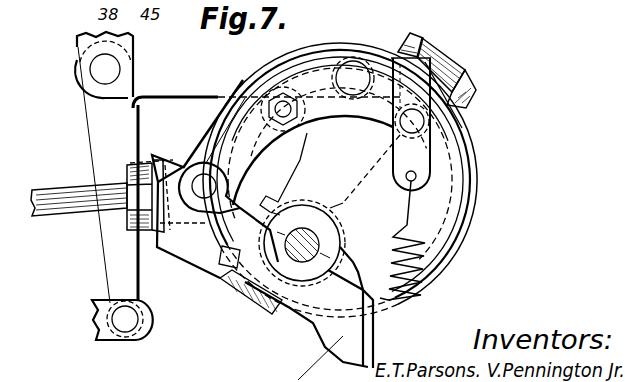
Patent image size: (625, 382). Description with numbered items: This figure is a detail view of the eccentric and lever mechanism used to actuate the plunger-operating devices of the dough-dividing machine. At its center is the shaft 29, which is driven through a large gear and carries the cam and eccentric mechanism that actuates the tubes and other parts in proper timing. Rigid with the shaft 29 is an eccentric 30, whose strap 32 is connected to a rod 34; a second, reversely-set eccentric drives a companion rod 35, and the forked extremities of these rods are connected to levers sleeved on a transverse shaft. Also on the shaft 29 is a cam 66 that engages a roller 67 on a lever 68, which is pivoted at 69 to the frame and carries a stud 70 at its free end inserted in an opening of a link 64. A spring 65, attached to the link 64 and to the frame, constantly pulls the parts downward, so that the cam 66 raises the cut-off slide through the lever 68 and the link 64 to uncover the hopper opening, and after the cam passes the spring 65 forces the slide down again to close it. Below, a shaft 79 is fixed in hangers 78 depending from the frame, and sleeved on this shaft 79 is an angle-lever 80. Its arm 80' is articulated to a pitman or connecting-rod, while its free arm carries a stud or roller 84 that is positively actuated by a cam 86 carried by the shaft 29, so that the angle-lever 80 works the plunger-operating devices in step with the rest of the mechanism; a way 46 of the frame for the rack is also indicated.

The shaft 29 is at (322, 238).
The eccentric 30 is at (440, 182).
The strap 32 is at (470, 228).
The rod 34 is at (66, 197).
The rod 35 is at (338, 12).
The way 46 is at (340, 87).
The link 64 is at (408, 153).
The spring 65 is at (433, 273).
The cam 66 is at (295, 178).
The roller 67 is at (217, 133).
The lever 68 is at (314, 109).
The pivot 69 is at (205, 190).
The stud 70 is at (418, 120).
The hanger 78 is at (82, 40).
The shaft 79 is at (100, 68).
The angle-lever 80 is at (108, 175).
The arm of angle-lever 80' is at (106, 304).
The stud or roller 84 is at (367, 63).
The cam 86 is at (343, 200).